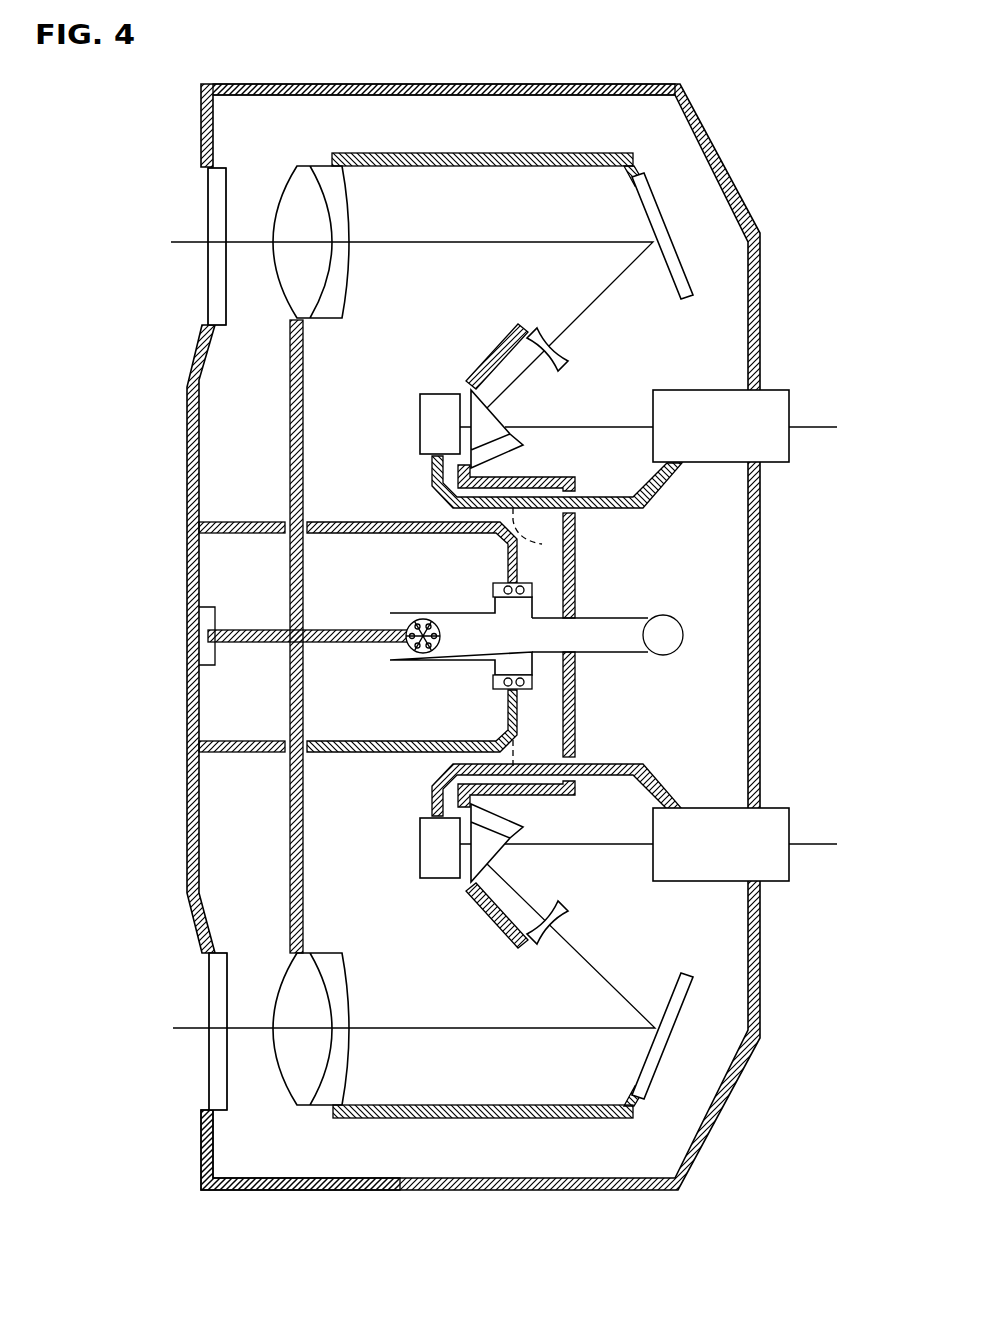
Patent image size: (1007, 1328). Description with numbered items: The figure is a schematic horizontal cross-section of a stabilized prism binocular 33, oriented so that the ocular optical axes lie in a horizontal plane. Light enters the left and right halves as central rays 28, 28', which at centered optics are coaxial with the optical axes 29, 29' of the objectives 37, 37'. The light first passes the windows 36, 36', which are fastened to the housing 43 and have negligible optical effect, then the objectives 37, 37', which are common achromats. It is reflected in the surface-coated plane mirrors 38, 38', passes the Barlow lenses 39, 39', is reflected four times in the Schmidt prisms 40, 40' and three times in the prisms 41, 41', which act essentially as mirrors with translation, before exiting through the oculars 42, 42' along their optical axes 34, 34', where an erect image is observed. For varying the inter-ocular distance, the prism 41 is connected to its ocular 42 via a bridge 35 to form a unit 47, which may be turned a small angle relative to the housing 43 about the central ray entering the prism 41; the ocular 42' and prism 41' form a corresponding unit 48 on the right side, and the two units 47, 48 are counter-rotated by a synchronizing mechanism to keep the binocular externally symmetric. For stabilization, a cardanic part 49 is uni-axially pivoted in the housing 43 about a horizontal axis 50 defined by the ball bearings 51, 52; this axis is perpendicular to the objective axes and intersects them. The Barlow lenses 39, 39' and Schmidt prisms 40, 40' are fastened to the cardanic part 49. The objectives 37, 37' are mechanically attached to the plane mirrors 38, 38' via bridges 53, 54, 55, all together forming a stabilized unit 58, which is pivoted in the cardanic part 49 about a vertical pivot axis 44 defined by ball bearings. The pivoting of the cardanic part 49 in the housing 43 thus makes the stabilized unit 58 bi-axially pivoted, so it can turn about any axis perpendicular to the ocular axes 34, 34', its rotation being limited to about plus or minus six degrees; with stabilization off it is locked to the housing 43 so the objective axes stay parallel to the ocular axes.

The housing 33 is at (750, 135).
The housing 43 is at (437, 84).
The stabilized unit 58 is at (250, 1122).
The bridge 54 is at (483, 153).
The bridge 53 is at (478, 1105).
The central ray 28' is at (189, 246).
The central ray 28 is at (195, 1031).
The window 36' is at (183, 246).
The window 36 is at (185, 1031).
The objective 37' is at (351, 242).
The objective 37 is at (345, 1029).
The optical axis 29' is at (412, 308).
The optical axis 29 is at (414, 945).
The plane mirror 38' is at (674, 234).
The plane mirror 38 is at (686, 1036).
The Barlow lens 39' is at (556, 356).
The Barlow lens 39 is at (548, 920).
The Schmidt prism 40' is at (528, 429).
The Schmidt prism 40 is at (528, 843).
The prism 41' is at (428, 406).
The prism 41 is at (410, 848).
The optical axis 34' is at (556, 407).
The optical axis 34 is at (556, 876).
The ocular 42' is at (765, 406).
The ocular 42 is at (750, 821).
The unit 48 is at (630, 537).
The unit 47 is at (575, 769).
The bridge 35 is at (640, 773).
The bridge 55 is at (305, 472).
The pivot axis 50 is at (598, 639).
The vertical pivot axis 44 is at (425, 658).
The cardanic part 49 is at (405, 660).
The ball bearing 51 is at (493, 590).
The ball bearing 52 is at (493, 692).